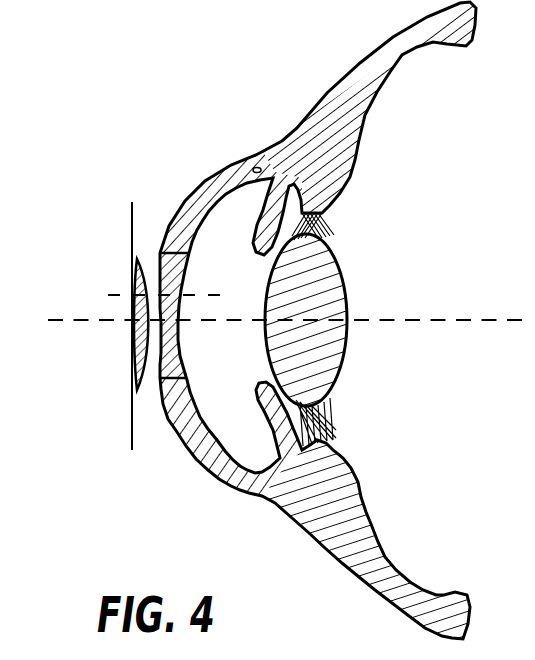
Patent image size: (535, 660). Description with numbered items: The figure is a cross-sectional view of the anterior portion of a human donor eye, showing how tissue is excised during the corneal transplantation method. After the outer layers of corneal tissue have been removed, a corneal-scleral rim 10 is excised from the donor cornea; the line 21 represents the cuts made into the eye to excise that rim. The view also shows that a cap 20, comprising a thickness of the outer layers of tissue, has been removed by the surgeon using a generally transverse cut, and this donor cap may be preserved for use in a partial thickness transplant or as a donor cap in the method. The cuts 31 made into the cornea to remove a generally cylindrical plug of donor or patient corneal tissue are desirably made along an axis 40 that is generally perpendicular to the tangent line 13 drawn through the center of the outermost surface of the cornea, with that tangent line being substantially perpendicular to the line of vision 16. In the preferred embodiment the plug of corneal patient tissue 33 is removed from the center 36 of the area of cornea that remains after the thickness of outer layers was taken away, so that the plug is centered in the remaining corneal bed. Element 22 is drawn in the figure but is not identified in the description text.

The corneal-scleral rim 10 is at (168, 463).
The tangent line 13 is at (133, 224).
The line of vision 16 is at (82, 321).
The cap 20 is at (137, 381).
The line 21 is at (250, 443).
The upper ciliary body 22 is at (263, 198).
The cuts 31 is at (190, 266).
The plug of corneal patient tissue 33 is at (180, 340).
The center 36 is at (181, 321).
The axis 40 is at (206, 296).